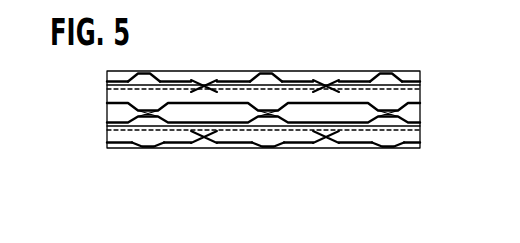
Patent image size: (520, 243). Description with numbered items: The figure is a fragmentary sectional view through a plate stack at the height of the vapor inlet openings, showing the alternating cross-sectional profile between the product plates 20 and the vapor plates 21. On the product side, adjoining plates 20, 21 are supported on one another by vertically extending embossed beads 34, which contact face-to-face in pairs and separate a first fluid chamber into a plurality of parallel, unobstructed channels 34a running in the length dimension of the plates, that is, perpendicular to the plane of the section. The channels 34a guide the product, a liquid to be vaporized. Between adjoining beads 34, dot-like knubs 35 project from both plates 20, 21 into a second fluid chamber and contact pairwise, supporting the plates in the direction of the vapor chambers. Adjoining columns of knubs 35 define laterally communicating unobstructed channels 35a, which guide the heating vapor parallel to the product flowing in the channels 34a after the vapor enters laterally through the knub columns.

The product plate 20 is at (168, 82).
The vapor plate 21 is at (205, 134).
The embossed bead 34 is at (277, 72).
The channel 34a is at (432, 111).
The knub 35 is at (331, 132).
The channel 35a is at (437, 153).